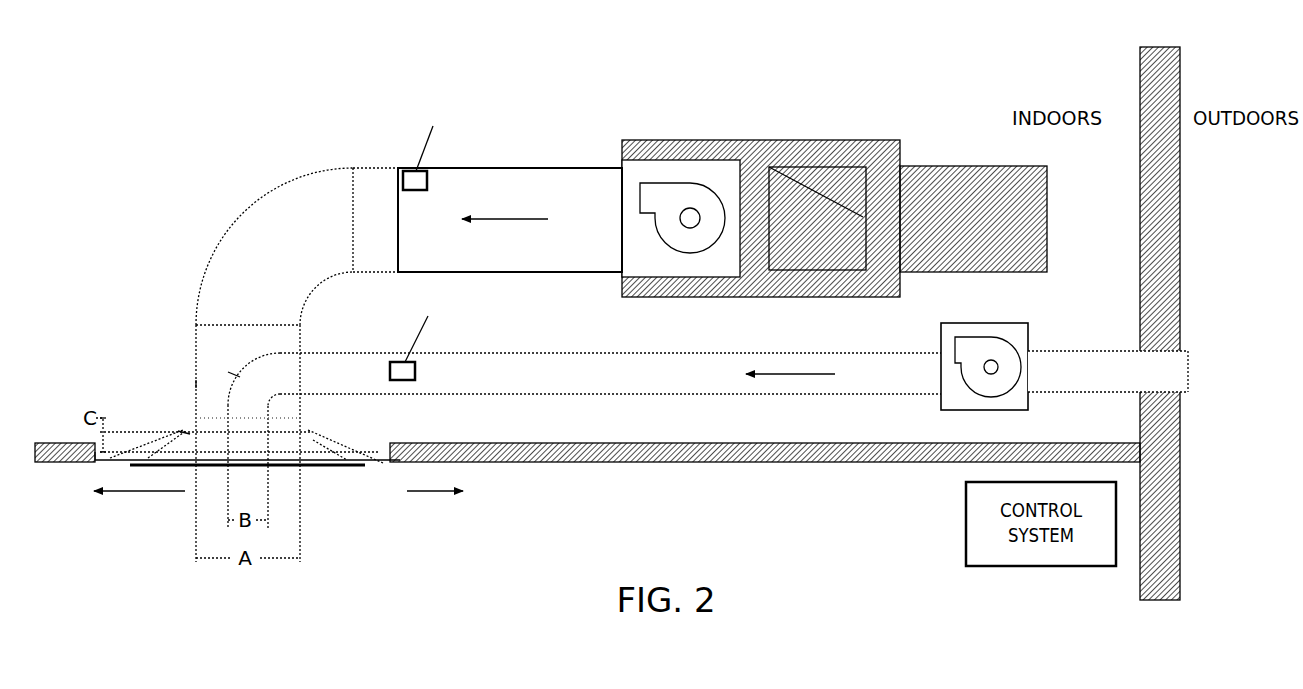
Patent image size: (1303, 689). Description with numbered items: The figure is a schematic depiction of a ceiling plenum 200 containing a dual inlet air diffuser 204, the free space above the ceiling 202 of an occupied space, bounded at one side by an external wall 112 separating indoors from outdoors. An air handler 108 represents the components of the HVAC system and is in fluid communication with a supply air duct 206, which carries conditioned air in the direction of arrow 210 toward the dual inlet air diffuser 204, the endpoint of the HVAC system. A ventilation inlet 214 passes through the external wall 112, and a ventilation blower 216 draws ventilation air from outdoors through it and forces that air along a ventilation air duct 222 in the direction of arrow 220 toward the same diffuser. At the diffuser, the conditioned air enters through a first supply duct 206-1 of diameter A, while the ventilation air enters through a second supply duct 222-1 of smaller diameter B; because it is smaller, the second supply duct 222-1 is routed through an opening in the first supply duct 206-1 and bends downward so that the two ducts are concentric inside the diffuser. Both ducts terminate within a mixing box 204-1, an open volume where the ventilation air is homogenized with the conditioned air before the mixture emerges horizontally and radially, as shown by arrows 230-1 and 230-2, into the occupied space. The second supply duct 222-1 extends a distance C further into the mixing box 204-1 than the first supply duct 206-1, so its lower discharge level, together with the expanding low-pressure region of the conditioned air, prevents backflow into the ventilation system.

The ceiling plenum 200 is at (188, 34).
The ceiling 202 is at (604, 443).
The dual inlet air diffuser 204 is at (378, 465).
The mixing box 204-1 is at (178, 431).
The supply air duct 206 is at (532, 168).
The first supply duct 206-1 is at (196, 384).
The air handler 108 is at (661, 140).
The external wall 112 is at (1140, 224).
The arrow 210 is at (491, 217).
The ventilation inlet 214 is at (1089, 352).
The ventilation blower 216 is at (983, 323).
The arrow 220 is at (796, 374).
The ventilation air duct 222 is at (511, 353).
The second supply duct 222-1 is at (240, 377).
The arrow 230-1 is at (462, 491).
The arrow 230-2 is at (110, 491).